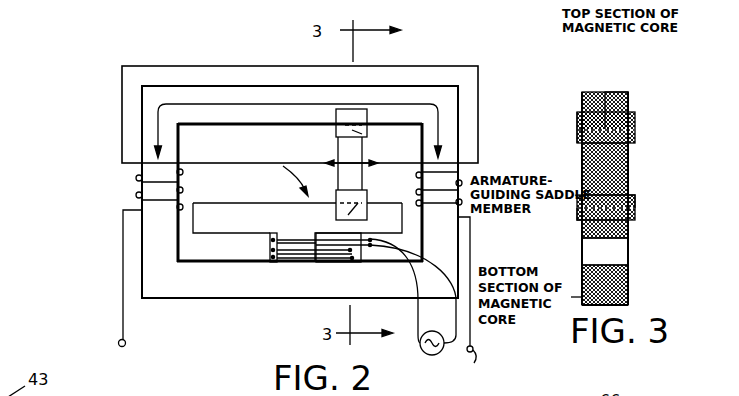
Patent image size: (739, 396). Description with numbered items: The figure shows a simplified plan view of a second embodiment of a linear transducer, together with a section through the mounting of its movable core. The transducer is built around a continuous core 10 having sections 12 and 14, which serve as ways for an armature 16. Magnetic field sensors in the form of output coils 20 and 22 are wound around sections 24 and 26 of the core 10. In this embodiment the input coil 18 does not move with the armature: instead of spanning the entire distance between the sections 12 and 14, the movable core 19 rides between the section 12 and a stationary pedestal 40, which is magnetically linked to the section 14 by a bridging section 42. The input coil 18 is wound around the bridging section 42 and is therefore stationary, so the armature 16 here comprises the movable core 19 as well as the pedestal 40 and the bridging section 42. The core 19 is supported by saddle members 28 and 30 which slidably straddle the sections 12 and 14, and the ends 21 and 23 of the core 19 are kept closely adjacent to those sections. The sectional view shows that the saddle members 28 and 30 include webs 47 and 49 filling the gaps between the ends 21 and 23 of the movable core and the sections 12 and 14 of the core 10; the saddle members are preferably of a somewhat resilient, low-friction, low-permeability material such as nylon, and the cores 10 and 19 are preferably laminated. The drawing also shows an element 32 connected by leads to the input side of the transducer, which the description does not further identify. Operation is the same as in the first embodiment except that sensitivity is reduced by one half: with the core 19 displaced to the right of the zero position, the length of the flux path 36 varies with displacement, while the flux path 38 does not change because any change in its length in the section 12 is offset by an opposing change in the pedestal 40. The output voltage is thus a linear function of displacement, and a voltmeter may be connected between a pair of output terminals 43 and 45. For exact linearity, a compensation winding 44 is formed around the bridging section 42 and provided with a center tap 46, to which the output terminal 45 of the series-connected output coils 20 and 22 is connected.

In FIG. 2, the continuous core 10 is at (420, 78).
In FIG. 3, the continuous core 10 is at (595, 92).
In FIG. 2, the section 12 is at (288, 107).
In FIG. 3, the section 12 is at (628, 100).
In FIG. 2, the section 14 is at (267, 292).
In FIG. 3, the section 14 is at (630, 298).
In FIG. 2, the armature 16 is at (277, 166).
In FIG. 2, the input coil 18 is at (270, 238).
In FIG. 2, the core 19 is at (345, 180).
In FIG. 3, the core 19 is at (630, 181).
In FIG. 2, the output coil 20 is at (180, 170).
In FIG. 2, the end 21 is at (362, 134).
In FIG. 3, the end 21 is at (630, 162).
In FIG. 2, the output coil 22 is at (416, 176).
In FIG. 2, the end 23 is at (348, 215).
In FIG. 3, the end 23 is at (634, 197).
In FIG. 2, the section 24 is at (148, 238).
In FIG. 2, the section 26 is at (452, 243).
In FIG. 2, the saddle member 28 is at (348, 115).
In FIG. 3, the saddle member 28 is at (636, 120).
In FIG. 2, the saddle member 30 is at (356, 216).
In FIG. 3, the saddle member 30 is at (636, 210).
In FIG. 2, the AC source 32 is at (432, 357).
In FIG. 2, the flux path 36 is at (158, 116).
In FIG. 2, the flux path 38 is at (445, 118).
In FIG. 2, the pedestal 40 is at (235, 213).
In FIG. 3, the pedestal 40 is at (630, 238).
In FIG. 2, the bridging section 42 is at (305, 263).
In FIG. 2, the output terminal 43 is at (127, 343).
In FIG. 2, the compensation winding 44 is at (270, 250).
In FIG. 2, the output terminal 45 is at (464, 296).
In FIG. 2, the center tap 46 is at (367, 262).
In FIG. 3, the web 47 is at (580, 152).
In FIG. 3, the web 49 is at (582, 222).